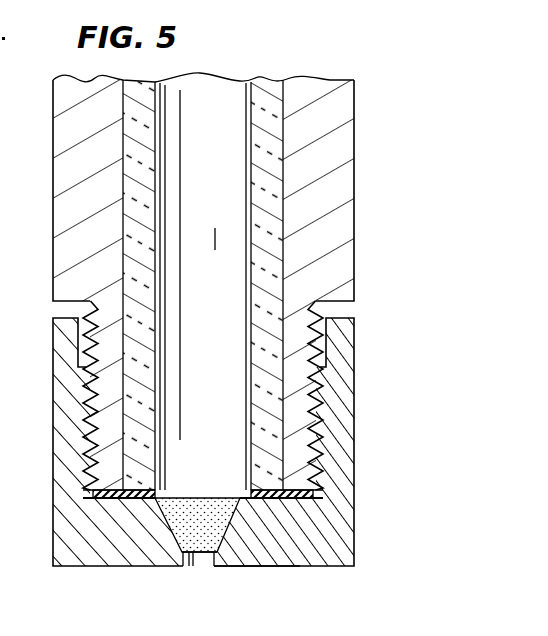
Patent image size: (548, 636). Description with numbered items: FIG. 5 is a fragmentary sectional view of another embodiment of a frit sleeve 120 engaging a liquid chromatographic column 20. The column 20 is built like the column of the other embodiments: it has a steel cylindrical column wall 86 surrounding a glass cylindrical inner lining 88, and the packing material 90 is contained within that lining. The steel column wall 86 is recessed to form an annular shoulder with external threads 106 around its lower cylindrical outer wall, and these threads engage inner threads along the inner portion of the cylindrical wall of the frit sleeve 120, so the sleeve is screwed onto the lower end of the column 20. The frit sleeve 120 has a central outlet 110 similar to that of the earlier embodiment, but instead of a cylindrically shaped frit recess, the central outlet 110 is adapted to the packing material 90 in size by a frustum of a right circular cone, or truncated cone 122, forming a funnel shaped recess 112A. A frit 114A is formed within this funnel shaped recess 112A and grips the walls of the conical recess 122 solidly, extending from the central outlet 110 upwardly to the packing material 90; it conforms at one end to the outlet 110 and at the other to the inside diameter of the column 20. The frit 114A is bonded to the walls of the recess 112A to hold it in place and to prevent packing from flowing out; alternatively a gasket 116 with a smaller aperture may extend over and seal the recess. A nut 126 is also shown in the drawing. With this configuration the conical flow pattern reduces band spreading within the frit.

The liquid chromatographic column 20 is at (237, 326).
The steel cylindrical column wall 86 is at (337, 222).
The glass cylindrical inner lining 88 is at (268, 90).
The packing material 90 is at (212, 95).
The external threads 106 is at (323, 352).
The nut 126 is at (337, 408).
The frit sleeve 120 is at (237, 467).
The truncated cone 122 is at (231, 538).
The gasket 116 is at (175, 493).
The funnel shaped recess 112A is at (173, 512).
The frit 114A is at (187, 541).
The central outlet 110 is at (213, 555).